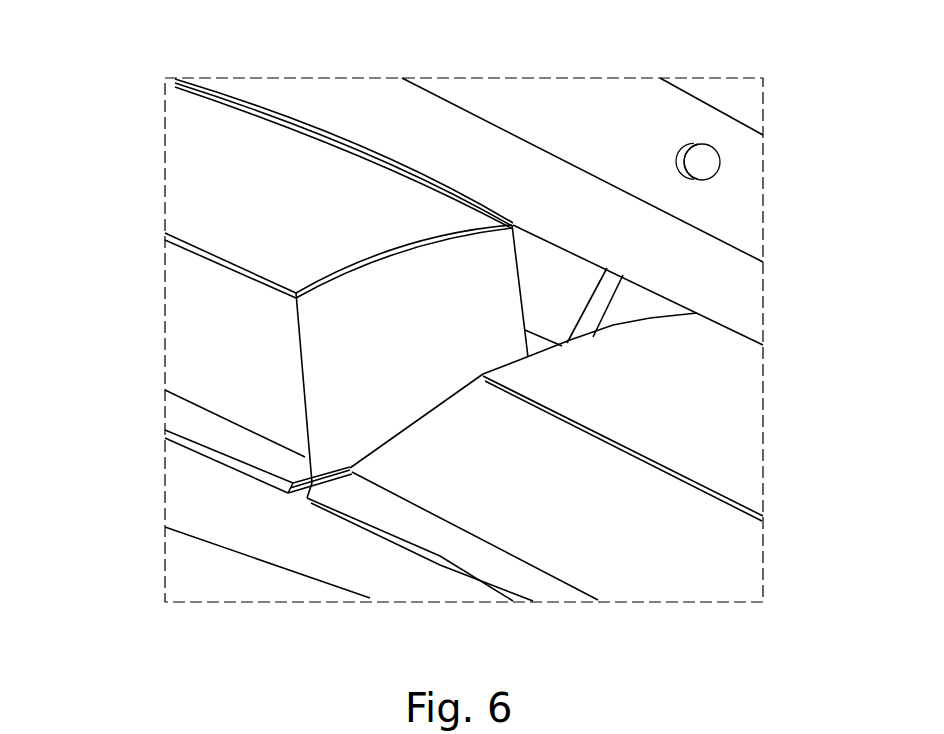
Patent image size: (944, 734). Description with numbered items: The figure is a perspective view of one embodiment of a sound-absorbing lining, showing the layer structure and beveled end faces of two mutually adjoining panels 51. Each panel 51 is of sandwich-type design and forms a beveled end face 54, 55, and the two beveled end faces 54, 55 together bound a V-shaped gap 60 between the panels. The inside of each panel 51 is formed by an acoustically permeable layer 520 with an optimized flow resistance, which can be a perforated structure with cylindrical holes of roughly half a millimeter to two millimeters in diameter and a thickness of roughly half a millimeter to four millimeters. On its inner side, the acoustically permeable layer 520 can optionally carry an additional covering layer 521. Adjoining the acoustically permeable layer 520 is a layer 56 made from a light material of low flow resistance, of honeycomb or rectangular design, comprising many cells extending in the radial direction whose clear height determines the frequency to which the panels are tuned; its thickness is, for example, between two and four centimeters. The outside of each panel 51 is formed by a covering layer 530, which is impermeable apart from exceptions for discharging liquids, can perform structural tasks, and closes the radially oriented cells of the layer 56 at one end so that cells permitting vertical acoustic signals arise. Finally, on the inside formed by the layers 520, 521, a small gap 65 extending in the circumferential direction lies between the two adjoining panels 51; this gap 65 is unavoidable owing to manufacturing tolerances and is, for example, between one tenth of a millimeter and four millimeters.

The panel 51 is at (195, 353).
The beveled end face 54 is at (468, 380).
The beveled end face 55 is at (480, 338).
The layer of low flow resistance 56 is at (242, 308).
The V-shaped gap 60 is at (531, 258).
The small gap 65 is at (295, 502).
The acoustically permeable layer 520 is at (547, 583).
The covering layer 521 is at (430, 557).
The covering layer 530 is at (738, 375).